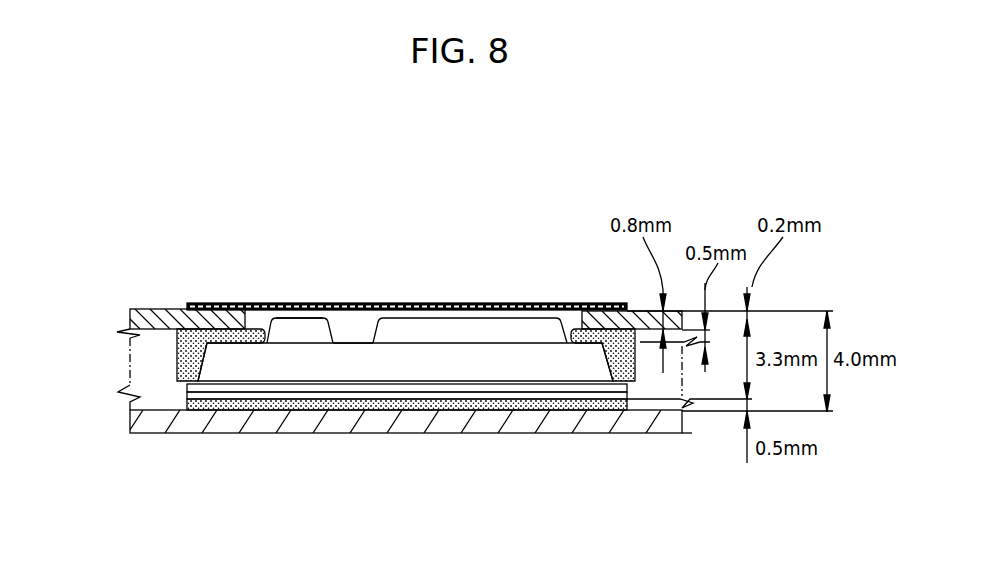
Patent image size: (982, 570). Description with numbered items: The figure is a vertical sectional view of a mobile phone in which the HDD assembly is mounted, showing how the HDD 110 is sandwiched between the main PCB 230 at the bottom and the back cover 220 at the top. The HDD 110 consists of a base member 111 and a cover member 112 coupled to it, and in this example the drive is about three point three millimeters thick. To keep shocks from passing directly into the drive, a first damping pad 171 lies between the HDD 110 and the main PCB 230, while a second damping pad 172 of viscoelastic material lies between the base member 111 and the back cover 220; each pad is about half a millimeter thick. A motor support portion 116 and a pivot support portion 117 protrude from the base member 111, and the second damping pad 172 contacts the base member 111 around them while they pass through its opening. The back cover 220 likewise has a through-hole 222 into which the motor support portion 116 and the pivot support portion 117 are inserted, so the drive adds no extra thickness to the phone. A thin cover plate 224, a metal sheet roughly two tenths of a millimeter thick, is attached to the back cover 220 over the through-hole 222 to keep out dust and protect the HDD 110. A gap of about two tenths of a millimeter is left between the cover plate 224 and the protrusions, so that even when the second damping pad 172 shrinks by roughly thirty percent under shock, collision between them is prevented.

The HDD 110 is at (158, 353).
The base member 111 is at (432, 367).
The cover member 112 is at (527, 395).
The motor support portion 116 is at (470, 305).
The pivot support portion 117 is at (302, 305).
The first damping pad 171 is at (287, 405).
The second damping pad 172 is at (210, 303).
The back cover 220 is at (173, 308).
The through-hole 222 is at (257, 305).
The cover plate 224 is at (344, 305).
The main PCB 230 is at (165, 433).